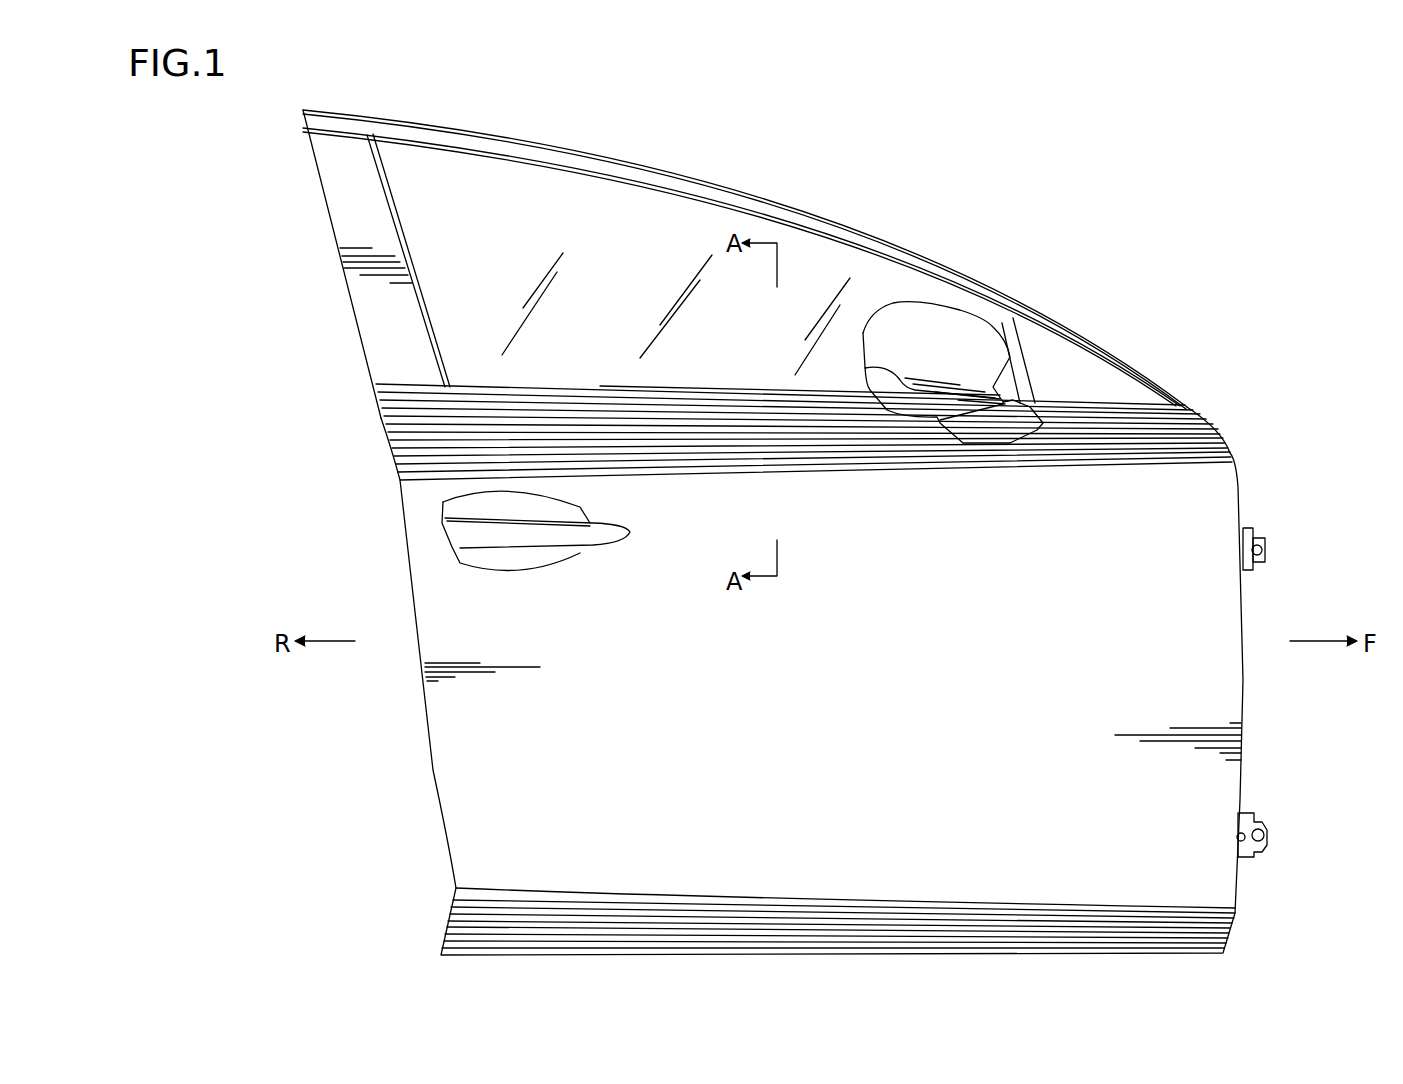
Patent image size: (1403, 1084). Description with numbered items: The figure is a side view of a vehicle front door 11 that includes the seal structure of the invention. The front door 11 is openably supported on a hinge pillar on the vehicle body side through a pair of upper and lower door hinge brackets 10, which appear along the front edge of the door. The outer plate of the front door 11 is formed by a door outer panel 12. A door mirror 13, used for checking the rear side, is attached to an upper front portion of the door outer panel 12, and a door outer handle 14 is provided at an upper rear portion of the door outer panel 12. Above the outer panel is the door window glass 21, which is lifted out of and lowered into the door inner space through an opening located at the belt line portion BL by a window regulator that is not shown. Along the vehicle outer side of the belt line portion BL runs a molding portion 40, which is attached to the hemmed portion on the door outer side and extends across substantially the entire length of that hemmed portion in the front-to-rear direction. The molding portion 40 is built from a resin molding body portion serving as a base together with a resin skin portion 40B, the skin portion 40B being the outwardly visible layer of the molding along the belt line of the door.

The door hinge bracket 10 is at (1247, 527).
The front door 11 is at (380, 526).
The door outer panel 12 is at (964, 611).
The door mirror 13 is at (933, 327).
The door outer handle 14 is at (530, 537).
The door window glass 21 is at (623, 217).
The molding portion 40 is at (707, 388).
The skin portion 40B is at (827, 400).
The belt line portion BL is at (611, 382).